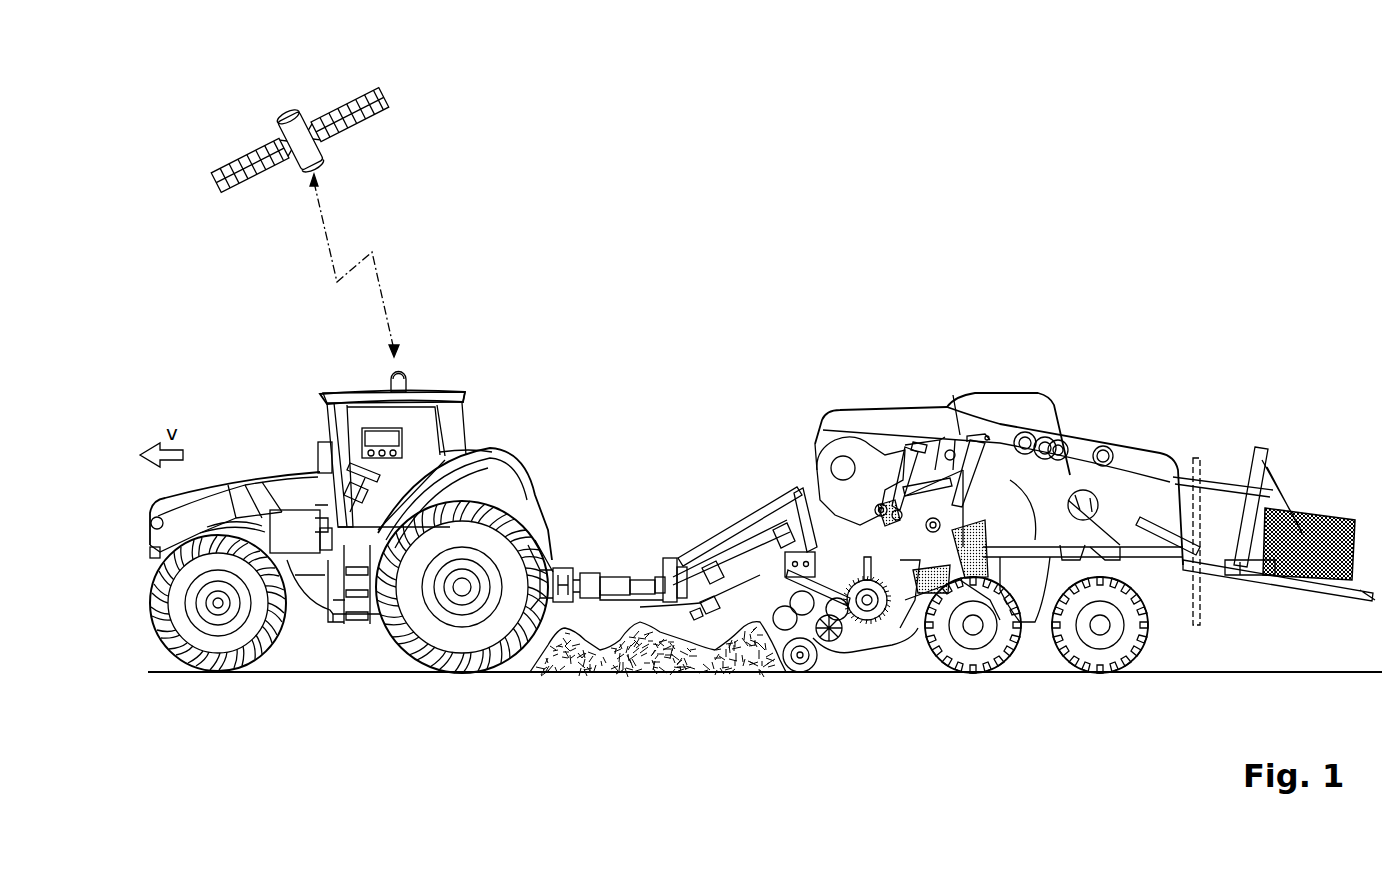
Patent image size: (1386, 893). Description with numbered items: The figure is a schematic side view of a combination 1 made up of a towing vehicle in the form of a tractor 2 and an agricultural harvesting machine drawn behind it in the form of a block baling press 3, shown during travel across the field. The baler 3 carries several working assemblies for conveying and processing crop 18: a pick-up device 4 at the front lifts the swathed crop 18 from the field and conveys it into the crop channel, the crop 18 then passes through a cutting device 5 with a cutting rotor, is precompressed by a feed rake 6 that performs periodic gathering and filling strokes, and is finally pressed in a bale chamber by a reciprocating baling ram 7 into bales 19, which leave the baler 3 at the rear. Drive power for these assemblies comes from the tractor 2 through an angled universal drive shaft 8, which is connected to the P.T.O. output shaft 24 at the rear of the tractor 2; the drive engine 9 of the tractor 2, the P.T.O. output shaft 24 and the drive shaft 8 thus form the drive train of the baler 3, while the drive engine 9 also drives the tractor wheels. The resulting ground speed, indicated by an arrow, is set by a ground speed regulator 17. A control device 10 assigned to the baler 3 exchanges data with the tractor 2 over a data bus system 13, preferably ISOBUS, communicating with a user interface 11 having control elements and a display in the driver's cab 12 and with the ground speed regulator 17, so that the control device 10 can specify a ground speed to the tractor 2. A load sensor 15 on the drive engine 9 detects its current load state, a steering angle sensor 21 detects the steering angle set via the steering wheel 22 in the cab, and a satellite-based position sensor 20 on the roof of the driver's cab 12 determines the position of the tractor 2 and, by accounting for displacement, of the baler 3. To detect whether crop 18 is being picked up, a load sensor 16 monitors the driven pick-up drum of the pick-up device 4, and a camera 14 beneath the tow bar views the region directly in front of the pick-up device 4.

The combination 1 is at (496, 288).
The tractor 2 is at (212, 361).
The block baling press 3 is at (887, 357).
The pick-up device 4 is at (790, 681).
The cutting device 5 is at (862, 646).
The feed rake 6 is at (985, 585).
The baling ram 7 is at (958, 438).
The drive shaft 8 is at (633, 577).
The drive engine 9 is at (290, 524).
The control device 10 is at (784, 560).
The user interface 11 is at (403, 440).
The driver's cab 12 is at (457, 394).
The data bus system 13 is at (650, 614).
The camera 14 is at (713, 624).
The load sensor 15 is at (327, 622).
The load sensor 16 is at (806, 666).
The ground speed regulator 17 is at (359, 624).
The crop 18 is at (588, 662).
The bales 19 is at (1330, 518).
The satellite-based position sensor 20 is at (392, 384).
The steering angle sensor 21 is at (352, 490).
The steering wheel 22 is at (452, 455).
The P.T.O. output shaft 24 is at (565, 567).